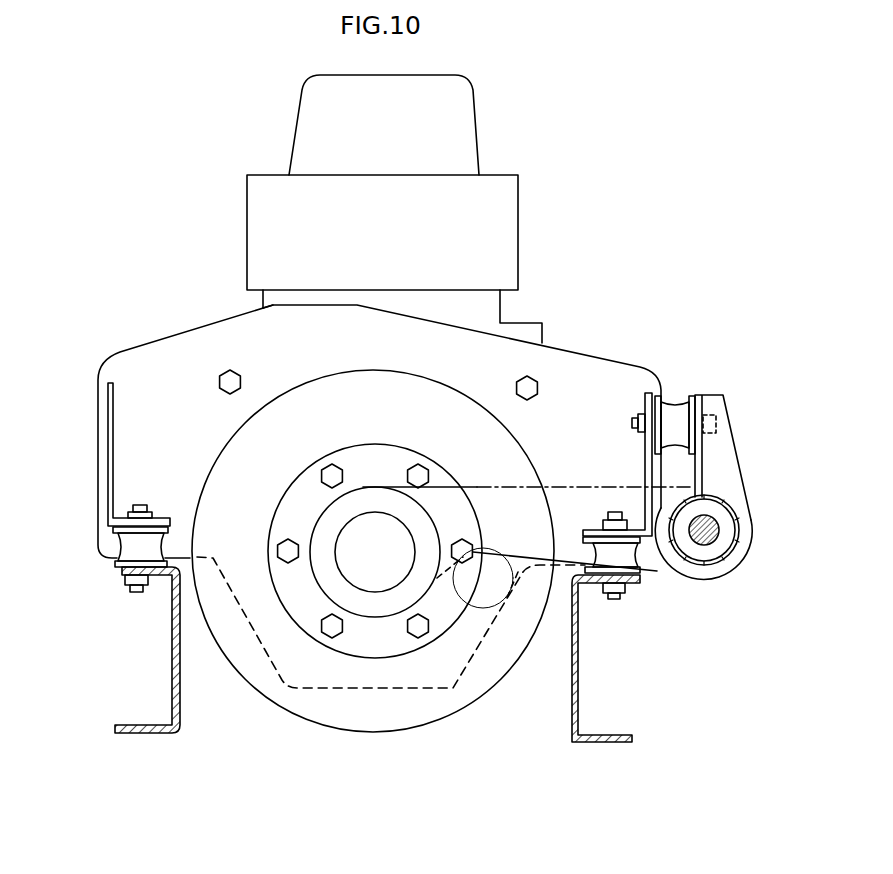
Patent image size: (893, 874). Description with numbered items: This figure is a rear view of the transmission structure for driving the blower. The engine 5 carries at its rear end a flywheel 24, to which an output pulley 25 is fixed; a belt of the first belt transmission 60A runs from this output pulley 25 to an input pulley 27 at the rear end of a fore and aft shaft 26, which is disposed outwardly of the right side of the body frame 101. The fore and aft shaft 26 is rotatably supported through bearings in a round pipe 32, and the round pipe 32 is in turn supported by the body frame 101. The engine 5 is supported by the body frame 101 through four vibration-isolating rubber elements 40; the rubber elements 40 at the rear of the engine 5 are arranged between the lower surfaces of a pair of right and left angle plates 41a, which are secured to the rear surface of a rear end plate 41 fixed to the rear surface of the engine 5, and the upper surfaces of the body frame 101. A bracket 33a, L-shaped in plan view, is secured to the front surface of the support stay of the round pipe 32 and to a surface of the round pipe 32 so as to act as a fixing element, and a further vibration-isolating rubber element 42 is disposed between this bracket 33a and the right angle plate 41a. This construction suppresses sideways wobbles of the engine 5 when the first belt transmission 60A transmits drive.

The engine 5 is at (298, 137).
The rear end plate 41 is at (202, 330).
The angle plates 41a is at (163, 518).
The vibration-isolating rubber element 42 is at (676, 402).
The bracket 33a is at (719, 395).
The flywheel 24 is at (228, 442).
The output pulley 25 is at (366, 487).
The first belt transmission 60A is at (577, 472).
The vibration-isolating rubber elements 40 is at (116, 545).
The fore and aft shaft 26 is at (712, 531).
The round pipe 32 is at (726, 556).
The input pulley 27 is at (706, 579).
The body frame 101 is at (170, 686).